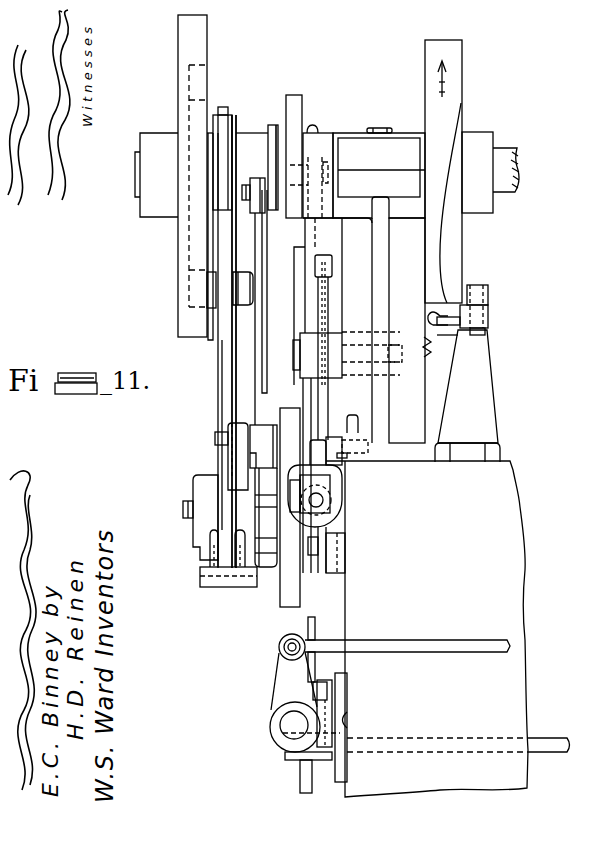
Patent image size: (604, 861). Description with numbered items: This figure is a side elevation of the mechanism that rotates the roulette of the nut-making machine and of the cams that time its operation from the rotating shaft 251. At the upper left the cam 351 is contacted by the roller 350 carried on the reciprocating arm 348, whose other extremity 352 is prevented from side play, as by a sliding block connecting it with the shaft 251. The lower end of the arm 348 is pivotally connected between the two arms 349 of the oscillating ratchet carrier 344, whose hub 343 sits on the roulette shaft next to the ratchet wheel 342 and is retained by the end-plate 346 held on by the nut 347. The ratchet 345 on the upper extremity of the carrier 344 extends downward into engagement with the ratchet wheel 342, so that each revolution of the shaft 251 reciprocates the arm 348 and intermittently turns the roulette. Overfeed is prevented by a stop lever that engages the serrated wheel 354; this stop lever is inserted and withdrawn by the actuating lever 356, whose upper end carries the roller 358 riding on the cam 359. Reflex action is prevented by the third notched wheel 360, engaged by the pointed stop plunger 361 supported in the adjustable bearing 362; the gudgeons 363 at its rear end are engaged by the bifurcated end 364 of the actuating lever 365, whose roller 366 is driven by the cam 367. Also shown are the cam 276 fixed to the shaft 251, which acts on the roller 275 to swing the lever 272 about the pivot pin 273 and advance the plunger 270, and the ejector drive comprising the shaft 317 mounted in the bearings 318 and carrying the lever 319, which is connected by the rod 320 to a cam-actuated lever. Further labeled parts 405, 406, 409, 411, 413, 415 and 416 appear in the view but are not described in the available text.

The shaft 251 is at (512, 152).
The plunger 270 is at (425, 342).
The lever 272 is at (489, 318).
The pivot pin 273 is at (455, 333).
The roller 275 is at (489, 294).
The cam 276 is at (443, 47).
The shaft 317 is at (287, 726).
The bearings 318 is at (343, 703).
The lever 319 is at (278, 694).
The rod 320 is at (477, 640).
The ratchet wheel 342 is at (268, 562).
The hub 343 is at (216, 484).
The oscillating ratchet carrier 344 is at (245, 430).
The ratchet 345 is at (263, 453).
The end-plate 346 is at (198, 486).
The nut 347 is at (183, 511).
The reciprocating arm 348 is at (219, 369).
The arms 349 is at (250, 585).
The roller 350 is at (208, 296).
The cam 351 is at (183, 241).
The other extremity 352 is at (224, 113).
The wheel 354 is at (288, 601).
The actuating lever 356 is at (263, 314).
The roller 358 is at (273, 188).
The cam 359 is at (273, 125).
The third notched wheel 360 is at (352, 599).
The stop plunger 361 is at (333, 501).
The bearing 362 is at (323, 524).
The gudgeons 363 is at (333, 518).
The bifurcated end 364 is at (333, 478).
The actuating lever 365 is at (315, 243).
The roller 366 is at (298, 158).
The cam 367 is at (297, 100).
The shaft 405 is at (558, 738).
The clip 406 is at (350, 721).
The pin 409 is at (312, 690).
The rod 411 is at (329, 299).
The rod head 413 is at (329, 264).
The block 415 is at (327, 136).
The bump 416 is at (313, 125).